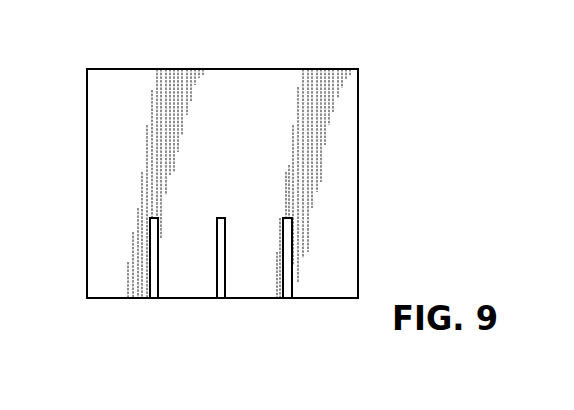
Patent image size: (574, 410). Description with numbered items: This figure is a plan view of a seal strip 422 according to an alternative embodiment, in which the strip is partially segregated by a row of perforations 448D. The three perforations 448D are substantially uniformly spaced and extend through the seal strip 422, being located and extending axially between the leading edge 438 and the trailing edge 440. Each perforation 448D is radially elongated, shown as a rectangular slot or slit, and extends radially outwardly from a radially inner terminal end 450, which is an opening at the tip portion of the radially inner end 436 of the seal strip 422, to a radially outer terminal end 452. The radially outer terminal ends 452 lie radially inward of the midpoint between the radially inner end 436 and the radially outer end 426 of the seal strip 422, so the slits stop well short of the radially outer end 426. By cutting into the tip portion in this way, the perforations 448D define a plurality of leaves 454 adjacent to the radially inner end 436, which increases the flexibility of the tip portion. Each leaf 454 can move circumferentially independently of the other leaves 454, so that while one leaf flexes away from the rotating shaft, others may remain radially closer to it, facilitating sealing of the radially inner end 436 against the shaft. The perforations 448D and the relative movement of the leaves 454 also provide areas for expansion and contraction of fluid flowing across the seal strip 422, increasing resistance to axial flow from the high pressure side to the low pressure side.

The seal strip 422 is at (362, 78).
The radially outer end 426 is at (120, 69).
The trailing edge 440 is at (358, 178).
The leading edge 438 is at (87, 238).
The radially inner end 436 is at (97, 298).
The radially inner terminal ends 450 is at (157, 298).
The radially outer terminal ends 452 is at (283, 218).
The leaves 454 is at (108, 298).
The perforations 448D is at (150, 272).